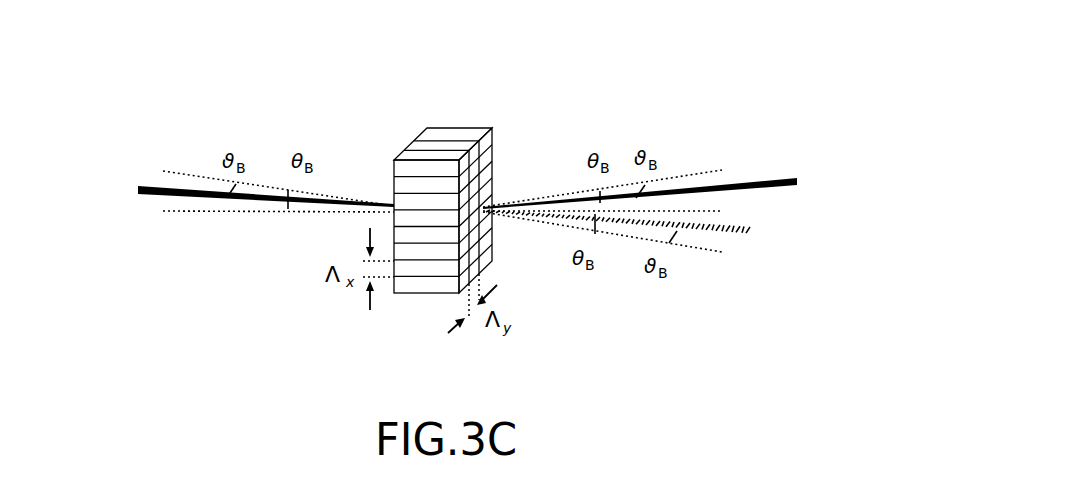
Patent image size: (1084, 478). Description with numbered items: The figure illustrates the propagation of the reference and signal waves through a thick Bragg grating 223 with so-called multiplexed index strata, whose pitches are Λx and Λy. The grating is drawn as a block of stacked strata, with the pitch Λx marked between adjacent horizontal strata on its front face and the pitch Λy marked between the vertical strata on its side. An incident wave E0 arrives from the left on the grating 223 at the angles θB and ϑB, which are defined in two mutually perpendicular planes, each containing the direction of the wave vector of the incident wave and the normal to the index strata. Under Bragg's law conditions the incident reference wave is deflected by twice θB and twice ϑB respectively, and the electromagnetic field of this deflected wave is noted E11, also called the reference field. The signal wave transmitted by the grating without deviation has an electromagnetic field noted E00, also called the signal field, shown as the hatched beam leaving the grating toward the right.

The thick Bragg grating with multiplexed index strata 223 is at (448, 131).
The electromagnetic field of the incident wave E0 is at (247, 191).
The electromagnetic field of the deflected wave E11 is at (695, 189).
The electromagnetic field of the signal wave E00 is at (670, 233).